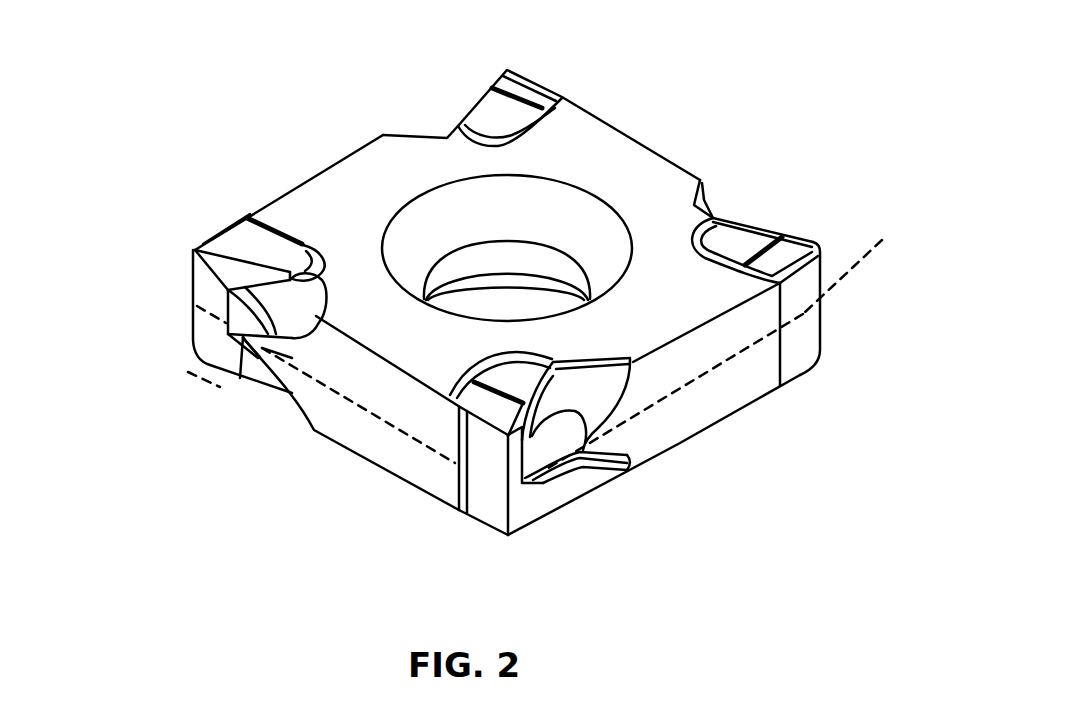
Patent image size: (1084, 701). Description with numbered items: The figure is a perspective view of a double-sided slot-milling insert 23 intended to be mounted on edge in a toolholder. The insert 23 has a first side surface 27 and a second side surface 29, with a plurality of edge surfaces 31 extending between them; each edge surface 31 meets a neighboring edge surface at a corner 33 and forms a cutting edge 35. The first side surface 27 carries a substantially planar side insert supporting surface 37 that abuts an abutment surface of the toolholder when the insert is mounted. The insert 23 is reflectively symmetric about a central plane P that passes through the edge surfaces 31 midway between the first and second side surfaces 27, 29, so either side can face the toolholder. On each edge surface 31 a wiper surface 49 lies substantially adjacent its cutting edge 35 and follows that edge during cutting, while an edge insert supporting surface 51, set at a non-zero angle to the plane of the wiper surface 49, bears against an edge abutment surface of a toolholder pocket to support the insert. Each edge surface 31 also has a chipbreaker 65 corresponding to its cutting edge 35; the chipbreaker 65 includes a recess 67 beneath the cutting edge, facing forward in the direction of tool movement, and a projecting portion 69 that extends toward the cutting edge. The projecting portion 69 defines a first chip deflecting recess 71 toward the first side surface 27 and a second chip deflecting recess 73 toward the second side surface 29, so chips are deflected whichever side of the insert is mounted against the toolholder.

The slot-milling insert 23 is at (676, 124).
The first side surface 27 is at (618, 155).
The second side surface 29 is at (708, 434).
The edge surface 31 is at (733, 396).
The corner 33 is at (520, 60).
The cutting edge 35 is at (826, 318).
The side insert supporting surface 37 is at (586, 148).
The wiper surface 49 is at (803, 342).
The edge insert supporting surface 51 is at (678, 434).
The chipbreaker 65 is at (235, 383).
The recess 67 is at (212, 323).
The projecting portion 69 is at (195, 255).
The first chip deflecting recess 71 is at (298, 302).
The second chip deflecting recess 73 is at (260, 367).
The central plane P is at (538, 346).